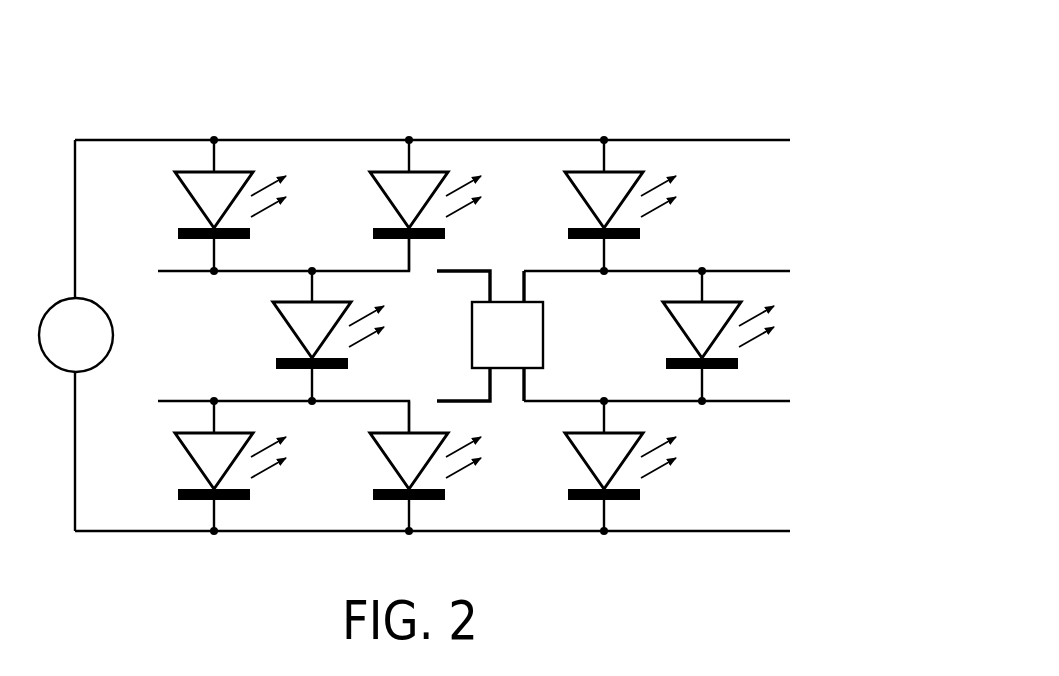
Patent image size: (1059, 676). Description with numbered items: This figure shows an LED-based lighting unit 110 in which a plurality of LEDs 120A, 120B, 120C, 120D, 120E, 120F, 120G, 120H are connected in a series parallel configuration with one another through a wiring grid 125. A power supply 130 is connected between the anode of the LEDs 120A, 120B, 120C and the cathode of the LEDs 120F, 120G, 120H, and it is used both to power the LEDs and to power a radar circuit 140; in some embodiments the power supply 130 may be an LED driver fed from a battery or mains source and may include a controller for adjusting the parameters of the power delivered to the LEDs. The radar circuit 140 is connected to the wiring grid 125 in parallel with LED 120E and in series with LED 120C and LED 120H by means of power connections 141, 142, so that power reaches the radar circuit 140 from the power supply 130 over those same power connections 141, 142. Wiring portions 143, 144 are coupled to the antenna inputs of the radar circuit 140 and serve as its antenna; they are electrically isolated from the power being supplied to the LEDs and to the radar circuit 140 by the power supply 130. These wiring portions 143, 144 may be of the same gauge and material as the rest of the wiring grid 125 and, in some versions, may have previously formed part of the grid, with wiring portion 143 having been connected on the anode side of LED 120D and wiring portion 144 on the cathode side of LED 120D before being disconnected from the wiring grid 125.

The LED-based lighting unit 110 is at (724, 100).
The wiring grid 125 is at (137, 140).
The power supply 130 is at (51, 312).
The LED 120A is at (197, 214).
The LED 120B is at (393, 214).
The LED 120C is at (588, 214).
The LED 120D is at (295, 345).
The LED 120E is at (685, 345).
The LED 120F is at (195, 475).
The LED 120G is at (393, 475).
The LED 120H is at (588, 475).
The radar circuit 140 is at (472, 320).
The power connection 141 is at (524, 285).
The power connection 142 is at (524, 370).
The wiring portion 143 is at (471, 275).
The wiring portion 144 is at (469, 396).